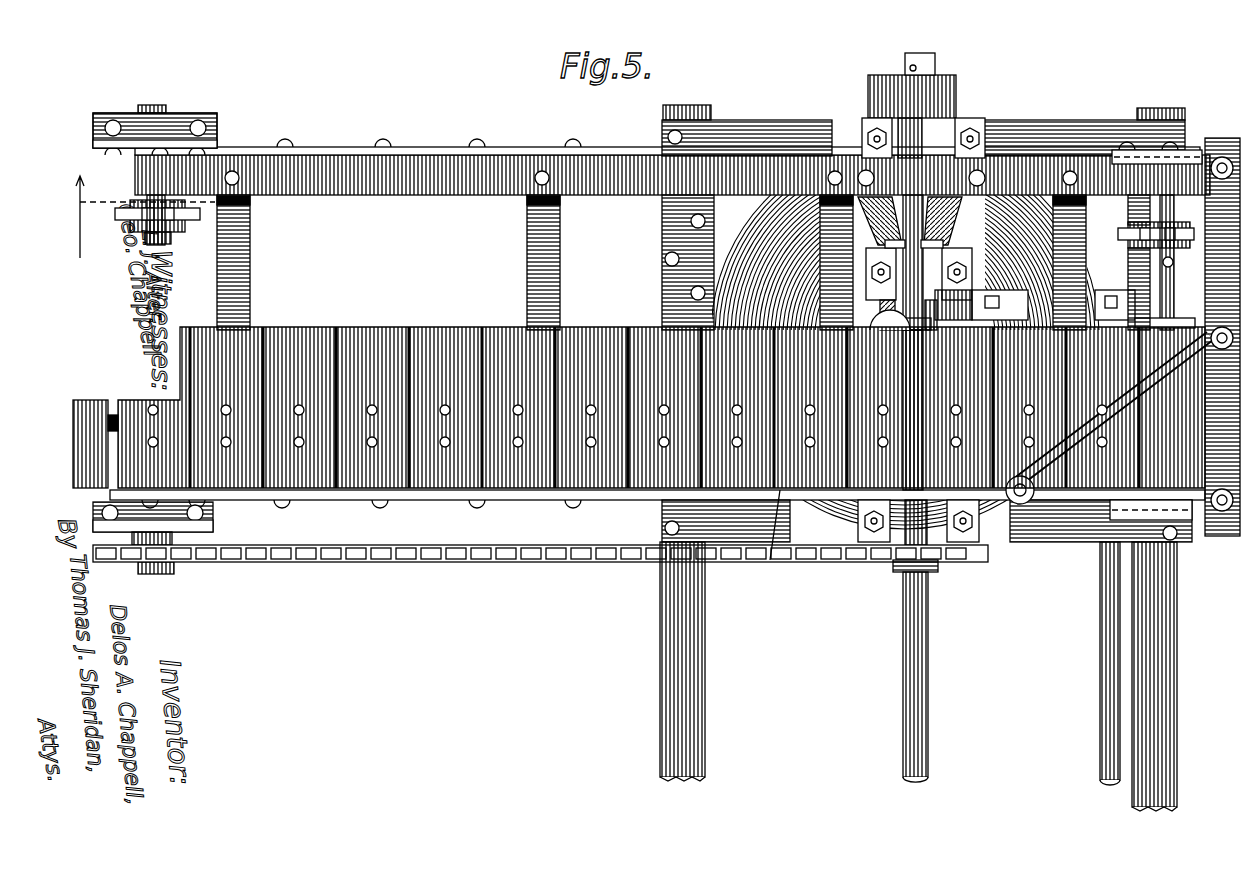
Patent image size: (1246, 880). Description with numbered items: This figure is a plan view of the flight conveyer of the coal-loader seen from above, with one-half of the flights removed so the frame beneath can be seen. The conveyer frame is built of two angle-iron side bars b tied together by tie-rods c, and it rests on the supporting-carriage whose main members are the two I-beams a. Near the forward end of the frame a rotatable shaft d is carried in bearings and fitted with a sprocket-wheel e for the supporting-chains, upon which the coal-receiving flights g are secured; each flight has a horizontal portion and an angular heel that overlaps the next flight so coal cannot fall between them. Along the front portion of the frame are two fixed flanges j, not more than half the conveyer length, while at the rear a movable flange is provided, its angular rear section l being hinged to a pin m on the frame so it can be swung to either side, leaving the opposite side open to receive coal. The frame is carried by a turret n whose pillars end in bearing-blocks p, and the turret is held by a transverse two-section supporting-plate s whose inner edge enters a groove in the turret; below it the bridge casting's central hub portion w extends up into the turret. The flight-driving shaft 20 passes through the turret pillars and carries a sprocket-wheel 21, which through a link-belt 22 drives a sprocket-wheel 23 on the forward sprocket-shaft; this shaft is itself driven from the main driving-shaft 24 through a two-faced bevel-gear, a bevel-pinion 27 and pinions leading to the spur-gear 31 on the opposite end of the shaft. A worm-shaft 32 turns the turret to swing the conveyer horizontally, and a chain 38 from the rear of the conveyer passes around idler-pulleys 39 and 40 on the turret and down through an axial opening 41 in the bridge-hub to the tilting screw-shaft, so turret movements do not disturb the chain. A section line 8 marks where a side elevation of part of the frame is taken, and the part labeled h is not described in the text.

The I-beams a is at (686, 120).
The side bars b is at (672, 175).
The tie-rods c is at (651, 262).
The rotatable shaft d is at (158, 195).
The sprocket-wheel e is at (138, 205).
The flights g is at (335, 330).
The rod h is at (775, 562).
The fixed flanges j is at (418, 150).
The angular rear section l is at (1120, 418).
The pin m is at (1205, 378).
The turret n is at (1005, 152).
The bearing-blocks p is at (930, 136).
The supporting-plate s is at (727, 128).
The central hub portion w is at (880, 318).
The section line 8 is at (129, 217).
The flight-driving shaft 20 is at (935, 65).
The sprocket-wheel 21 is at (930, 572).
The link-belt 22 is at (610, 562).
The sprocket-wheel 23 is at (136, 560).
The main driving-shaft 24 is at (915, 683).
The bevel-pinion 27 is at (950, 222).
The spur-gear 31 is at (885, 95).
The worm-shaft 32 is at (1108, 675).
The chain 38 is at (990, 320).
The idler-pulley 39 is at (1168, 326).
The idler-pulley 40 is at (930, 332).
The axial opening 41 is at (885, 332).